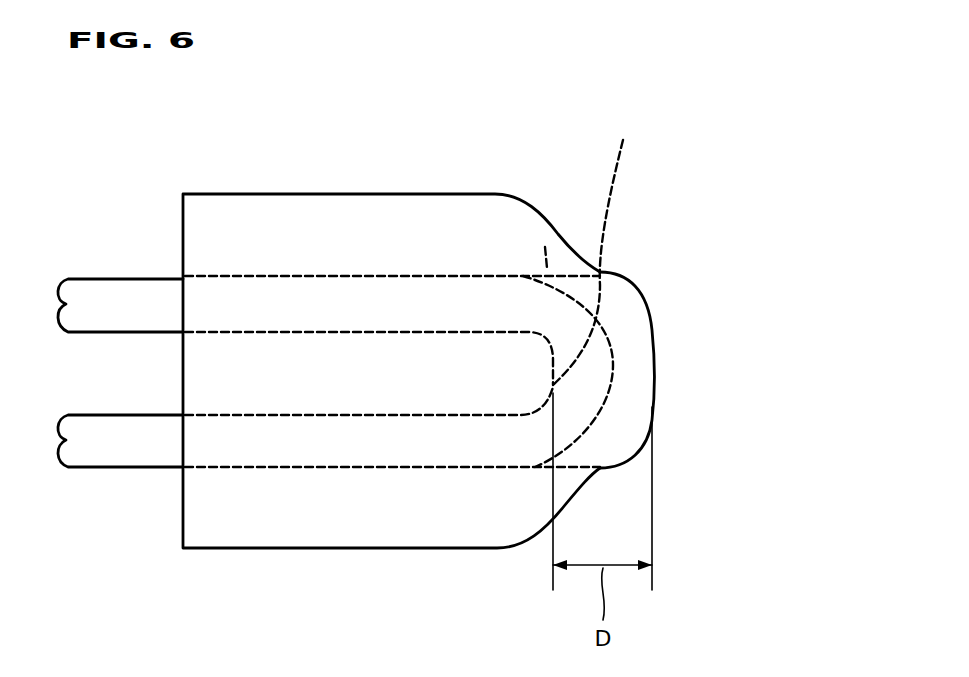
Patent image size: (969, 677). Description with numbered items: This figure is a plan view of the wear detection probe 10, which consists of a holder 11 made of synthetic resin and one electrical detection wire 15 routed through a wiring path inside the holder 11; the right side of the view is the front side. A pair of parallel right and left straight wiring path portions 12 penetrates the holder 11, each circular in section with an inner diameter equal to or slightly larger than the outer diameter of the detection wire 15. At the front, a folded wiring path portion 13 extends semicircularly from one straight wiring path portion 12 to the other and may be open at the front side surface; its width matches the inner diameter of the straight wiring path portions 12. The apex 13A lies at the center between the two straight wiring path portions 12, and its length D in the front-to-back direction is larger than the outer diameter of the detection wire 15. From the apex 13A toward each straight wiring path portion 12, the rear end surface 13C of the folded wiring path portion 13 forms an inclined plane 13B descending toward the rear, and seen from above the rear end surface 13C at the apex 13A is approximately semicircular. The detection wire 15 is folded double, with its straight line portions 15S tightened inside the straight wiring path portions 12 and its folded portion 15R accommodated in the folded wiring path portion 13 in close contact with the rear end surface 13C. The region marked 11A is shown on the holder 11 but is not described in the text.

The wear detection probe 10 is at (668, 186).
The holder 11 is at (397, 210).
The housing interior 11A is at (380, 360).
The straight wiring path portion 12 is at (272, 291).
The folded wiring path portion 13 is at (555, 385).
The apex 13A is at (627, 395).
The inclined plane 13B is at (523, 275).
The rear end surface 13C is at (600, 285).
The detection wire 15 is at (137, 258).
The folded portion 15R is at (613, 352).
The straight line portion 15S is at (323, 318).